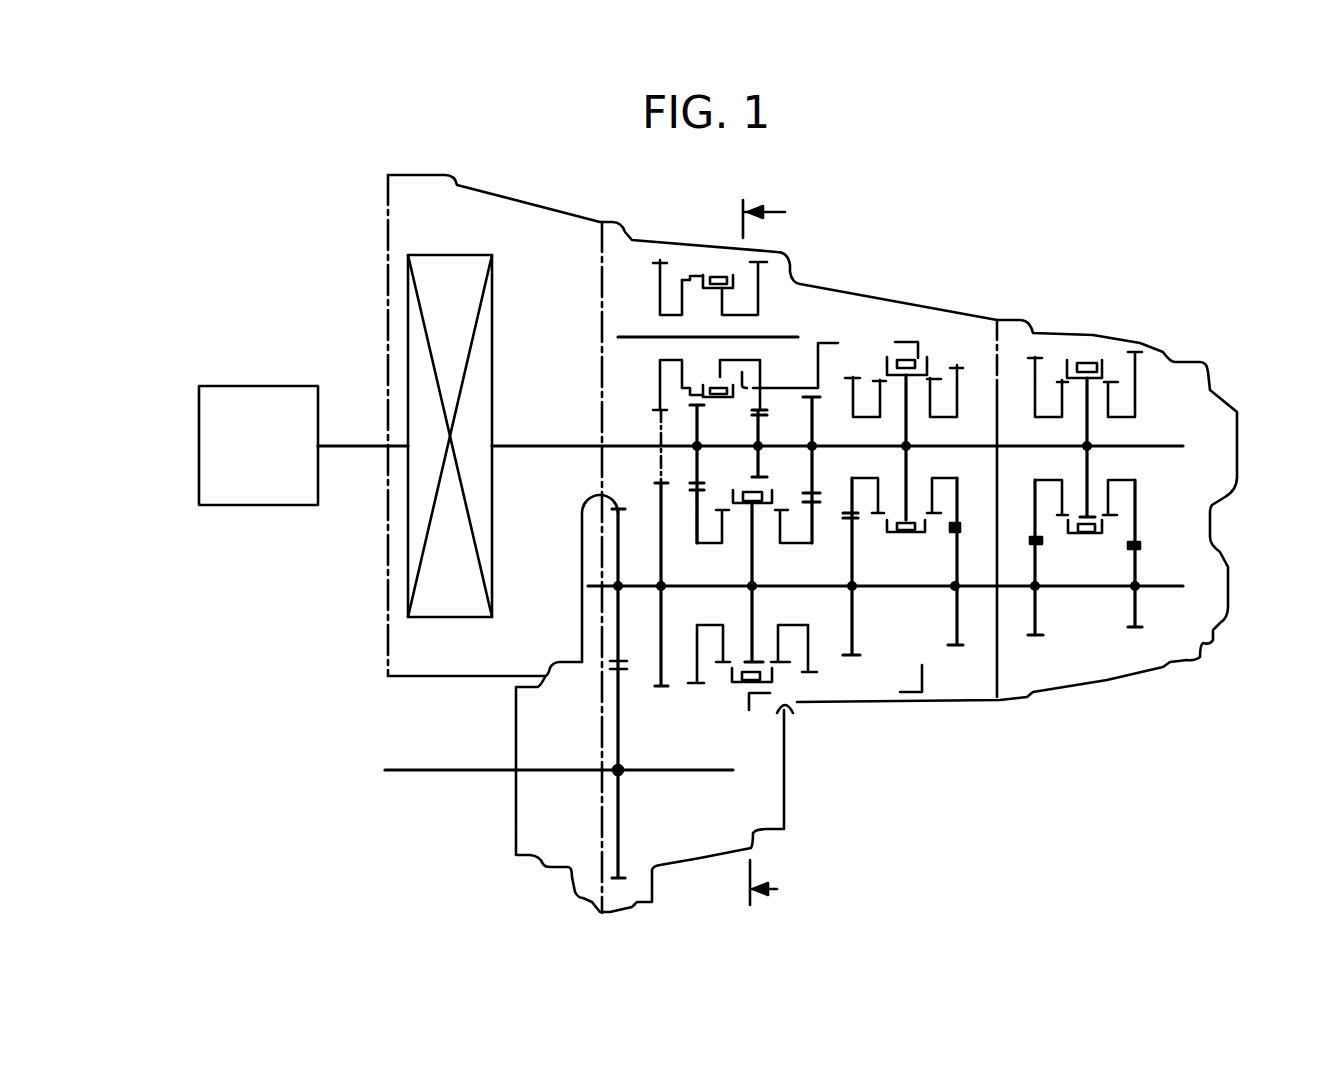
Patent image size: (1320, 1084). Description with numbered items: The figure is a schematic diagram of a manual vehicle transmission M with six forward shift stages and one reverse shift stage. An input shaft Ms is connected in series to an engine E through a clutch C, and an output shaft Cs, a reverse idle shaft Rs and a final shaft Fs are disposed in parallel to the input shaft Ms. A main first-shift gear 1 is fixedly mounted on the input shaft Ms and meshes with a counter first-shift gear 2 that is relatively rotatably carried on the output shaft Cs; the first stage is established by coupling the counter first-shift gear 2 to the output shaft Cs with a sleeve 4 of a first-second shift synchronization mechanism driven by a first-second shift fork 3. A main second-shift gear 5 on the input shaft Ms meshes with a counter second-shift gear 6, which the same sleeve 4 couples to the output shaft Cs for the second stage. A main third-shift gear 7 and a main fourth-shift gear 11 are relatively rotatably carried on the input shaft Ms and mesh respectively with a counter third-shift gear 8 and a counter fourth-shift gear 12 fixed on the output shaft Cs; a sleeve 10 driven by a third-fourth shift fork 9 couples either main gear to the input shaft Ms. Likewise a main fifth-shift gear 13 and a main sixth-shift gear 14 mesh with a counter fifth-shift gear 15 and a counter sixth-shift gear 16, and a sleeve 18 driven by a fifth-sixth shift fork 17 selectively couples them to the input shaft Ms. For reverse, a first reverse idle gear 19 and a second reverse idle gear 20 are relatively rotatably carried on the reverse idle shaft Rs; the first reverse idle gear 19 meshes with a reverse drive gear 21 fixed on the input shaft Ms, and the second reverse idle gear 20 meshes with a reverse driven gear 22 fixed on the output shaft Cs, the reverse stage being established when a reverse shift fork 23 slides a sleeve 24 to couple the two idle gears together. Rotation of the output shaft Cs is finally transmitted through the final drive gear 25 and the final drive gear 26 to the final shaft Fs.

The engine E is at (270, 466).
The clutch C is at (485, 355).
The transmission M is at (917, 300).
The input shaft Ms is at (1150, 446).
The output shaft Cs is at (1153, 586).
The reverse idle shaft Rs is at (798, 337).
The final shaft Fs is at (470, 770).
The main first-shift gear 1 is at (700, 405).
The counter first-shift gear 2 is at (693, 683).
The first-second shift fork 3 is at (742, 683).
The sleeve 4 is at (772, 672).
The main second-shift gear 5 is at (817, 397).
The counter second-shift gear 6 is at (810, 683).
The main third-shift gear 7 is at (852, 377).
The counter third-shift gear 8 is at (852, 657).
The third-fourth shift fork 9 is at (900, 535).
The sleeve 10 is at (927, 358).
The main fourth-shift gear 11 is at (962, 368).
The counter fourth-shift gear 12 is at (957, 650).
The main fifth-shift gear 13 is at (1040, 357).
The main sixth-shift gear 14 is at (1138, 352).
The counter fifth-shift gear 15 is at (1033, 637).
The counter sixth-shift gear 16 is at (1133, 628).
The fifth-sixth shift fork 17 is at (1080, 537).
The sleeve 18 is at (1100, 372).
The first reverse idle gear 19 is at (763, 262).
The second reverse idle gear 20 is at (660, 258).
The reverse drive gear 21 is at (762, 413).
The reverse driven gear 22 is at (660, 483).
The reverse shift fork 23 is at (722, 275).
The sleeve 24 is at (697, 273).
The final drive gear 25 is at (602, 491).
The final drive gear 26 is at (610, 670).